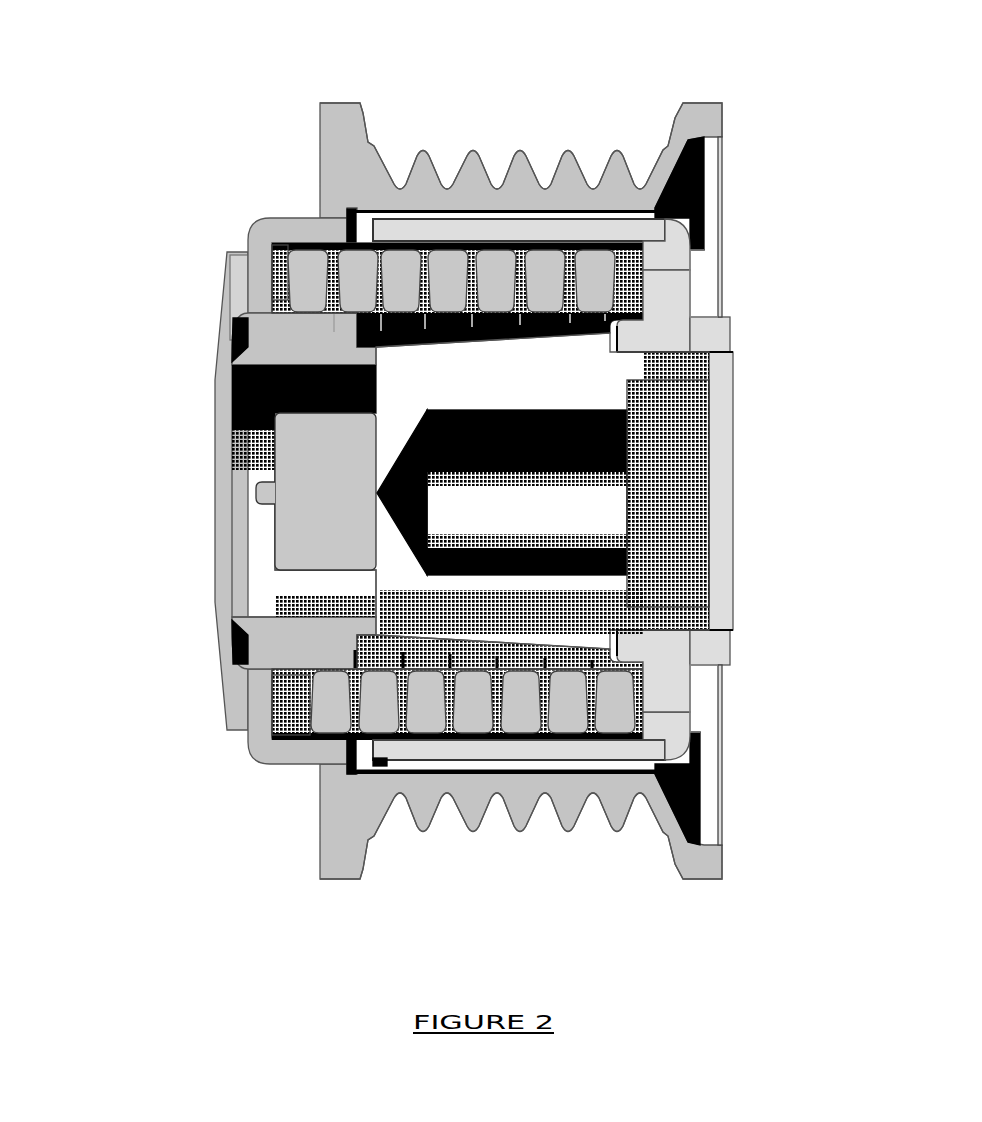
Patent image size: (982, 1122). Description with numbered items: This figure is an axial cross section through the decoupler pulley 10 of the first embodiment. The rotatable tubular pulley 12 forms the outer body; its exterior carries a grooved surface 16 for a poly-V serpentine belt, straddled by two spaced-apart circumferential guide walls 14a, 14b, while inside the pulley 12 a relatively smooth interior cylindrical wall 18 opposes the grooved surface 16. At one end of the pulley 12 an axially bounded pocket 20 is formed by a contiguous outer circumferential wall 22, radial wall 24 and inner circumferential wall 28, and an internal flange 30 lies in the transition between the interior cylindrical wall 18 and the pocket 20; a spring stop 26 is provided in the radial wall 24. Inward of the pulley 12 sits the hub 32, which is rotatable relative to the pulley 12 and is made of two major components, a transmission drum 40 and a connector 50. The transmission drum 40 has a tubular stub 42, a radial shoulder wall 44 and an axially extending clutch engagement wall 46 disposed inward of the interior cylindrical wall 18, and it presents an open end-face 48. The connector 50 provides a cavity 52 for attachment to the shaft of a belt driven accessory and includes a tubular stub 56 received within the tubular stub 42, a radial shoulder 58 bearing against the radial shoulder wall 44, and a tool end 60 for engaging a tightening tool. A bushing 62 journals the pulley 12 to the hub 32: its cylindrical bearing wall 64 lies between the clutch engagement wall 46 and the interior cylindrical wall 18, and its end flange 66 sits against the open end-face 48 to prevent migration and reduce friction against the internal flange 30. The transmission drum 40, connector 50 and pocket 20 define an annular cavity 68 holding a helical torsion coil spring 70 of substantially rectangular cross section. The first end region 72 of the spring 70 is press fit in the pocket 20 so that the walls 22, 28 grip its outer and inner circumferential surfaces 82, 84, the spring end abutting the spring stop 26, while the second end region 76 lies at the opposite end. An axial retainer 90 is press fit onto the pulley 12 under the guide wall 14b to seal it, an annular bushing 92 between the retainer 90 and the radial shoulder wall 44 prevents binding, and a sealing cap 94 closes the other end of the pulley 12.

The decoupler pulley 10 is at (126, 63).
The pulley 12 is at (318, 134).
The circumferential guide wall 14a is at (333, 101).
The circumferential guide wall 14b is at (703, 102).
The grooved surface 16 is at (512, 165).
The interior cylindrical wall 18 is at (478, 214).
The pocket 20 is at (276, 272).
The outer circumferential wall 22 is at (288, 218).
The radial wall 24 is at (258, 274).
The spring stop 26 is at (290, 710).
The inner circumferential wall 28 is at (306, 333).
The internal flange 30 is at (348, 227).
The hub 32 is at (707, 355).
The transmission drum 40 is at (670, 240).
The tubular stub 42 is at (727, 324).
The radial shoulder wall 44 is at (675, 283).
The clutch engagement wall 46 is at (586, 262).
The open end-face 48 is at (375, 758).
The connector 50 is at (710, 443).
The cavity 52 is at (685, 480).
The tubular stub 56 is at (695, 370).
The radial shoulder 58 is at (642, 335).
The tool end 60 is at (277, 533).
The bushing 62 is at (532, 215).
The cylindrical bearing wall 64 is at (453, 768).
The end flange 66 is at (355, 755).
The annular cavity 68 is at (423, 250).
The helical torsion coil spring 70 is at (525, 707).
The first end region 72 is at (332, 728).
The second end region 76 is at (613, 727).
The outer circumferential surface 82 is at (423, 735).
The inner circumferential surface 84 is at (427, 662).
The axial retainer 90 is at (716, 173).
The annular bushing 92 is at (698, 257).
The sealing cap 94 is at (220, 588).